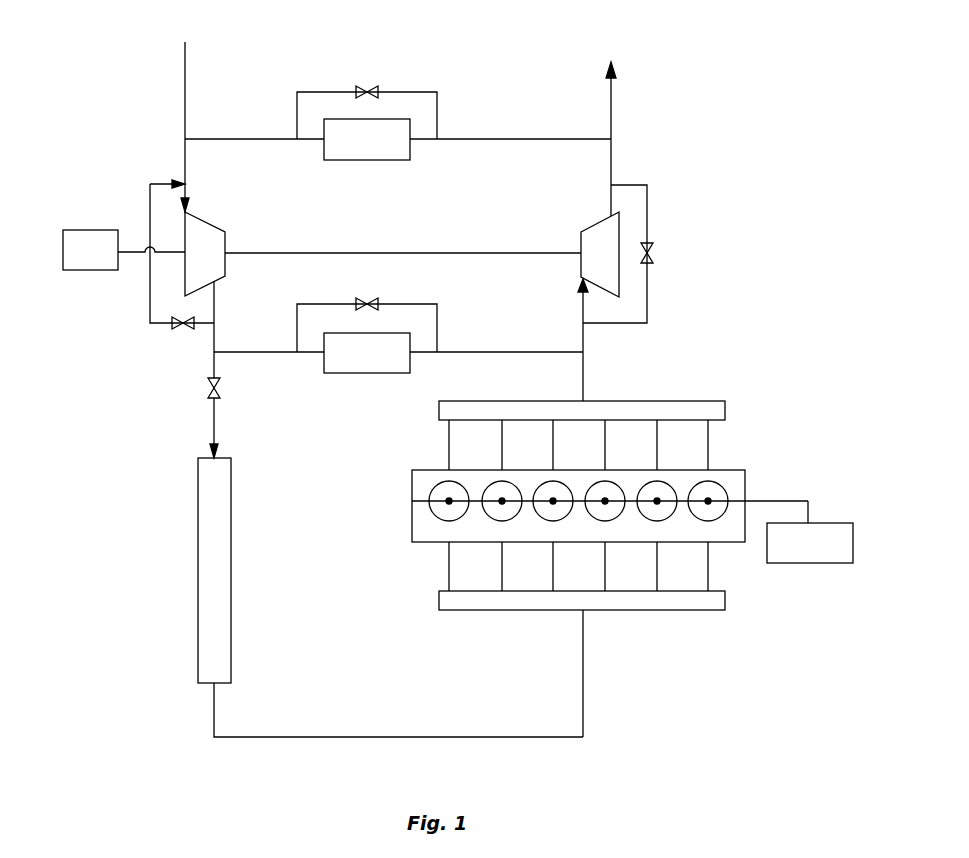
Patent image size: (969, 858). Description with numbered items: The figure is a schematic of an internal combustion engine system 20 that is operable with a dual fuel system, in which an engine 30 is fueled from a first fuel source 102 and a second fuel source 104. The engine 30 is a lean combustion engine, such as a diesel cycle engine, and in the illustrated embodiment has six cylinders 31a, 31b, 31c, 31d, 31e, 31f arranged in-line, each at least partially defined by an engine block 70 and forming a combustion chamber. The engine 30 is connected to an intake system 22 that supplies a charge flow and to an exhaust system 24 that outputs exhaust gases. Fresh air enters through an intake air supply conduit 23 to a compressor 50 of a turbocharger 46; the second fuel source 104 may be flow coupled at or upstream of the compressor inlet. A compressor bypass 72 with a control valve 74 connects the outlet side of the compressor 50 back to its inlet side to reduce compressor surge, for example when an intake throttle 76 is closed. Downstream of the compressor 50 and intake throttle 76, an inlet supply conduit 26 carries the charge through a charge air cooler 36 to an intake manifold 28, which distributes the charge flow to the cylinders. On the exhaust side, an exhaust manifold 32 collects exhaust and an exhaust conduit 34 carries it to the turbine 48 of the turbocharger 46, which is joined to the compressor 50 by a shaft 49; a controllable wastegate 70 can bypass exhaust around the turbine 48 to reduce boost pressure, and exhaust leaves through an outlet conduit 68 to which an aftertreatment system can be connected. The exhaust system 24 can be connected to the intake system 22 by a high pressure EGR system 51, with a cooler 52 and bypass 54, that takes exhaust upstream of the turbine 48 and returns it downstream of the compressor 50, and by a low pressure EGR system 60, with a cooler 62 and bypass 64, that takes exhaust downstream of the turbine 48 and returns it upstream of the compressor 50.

The internal combustion engine system 20 is at (806, 353).
The intake system 22 is at (170, 676).
The intake air supply conduit 23 is at (186, 82).
The exhaust system 24 is at (668, 147).
The inlet supply conduit 26 is at (583, 682).
The intake manifold 28 is at (672, 611).
The engine 30 is at (411, 503).
The cylinder 31a is at (703, 512).
The cylinder 31b is at (645, 510).
The cylinder 31c is at (597, 512).
The cylinder 31d is at (551, 510).
The cylinder 31e is at (497, 512).
The cylinder 31f is at (460, 498).
The exhaust manifold 32 is at (672, 401).
The exhaust conduit 34 is at (583, 385).
The charge air cooler 36 is at (198, 568).
The turbocharger 46 is at (378, 226).
The turbine 48 is at (600, 254).
The shaft 49 is at (297, 250).
The compressor 50 is at (205, 254).
The high pressure EGR system 51 is at (357, 390).
The cooler 52 is at (397, 360).
The bypass 54 is at (425, 304).
The low pressure EGR system 60 is at (369, 60).
The cooler 62 is at (397, 148).
The bypass 64 is at (425, 92).
The outlet conduit 68 is at (611, 122).
The controllable wastegate 70 is at (647, 207).
The compressor bypass 72 is at (150, 310).
The control valve 74 is at (183, 330).
The intake throttle 76 is at (210, 392).
The first fuel source 102 is at (818, 523).
The second fuel source 104 is at (97, 230).